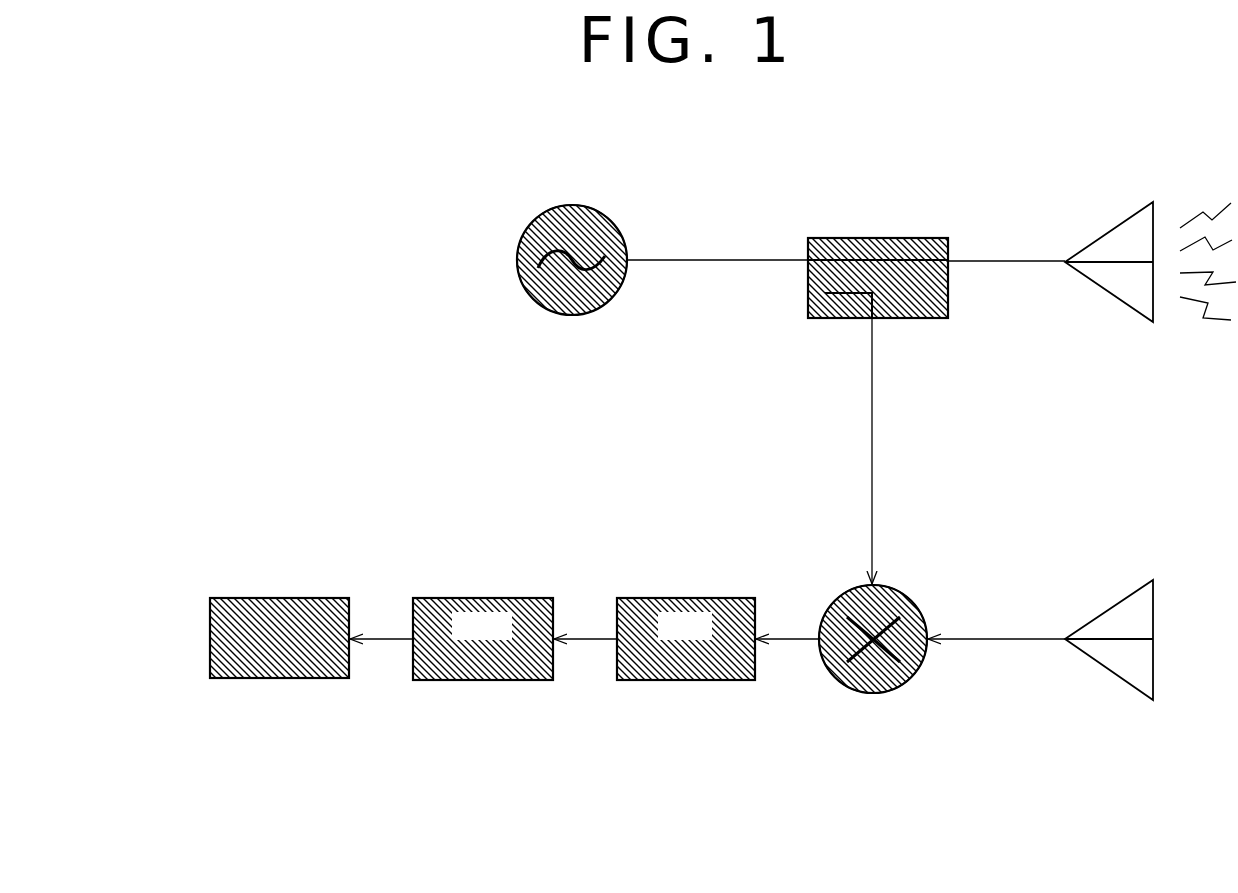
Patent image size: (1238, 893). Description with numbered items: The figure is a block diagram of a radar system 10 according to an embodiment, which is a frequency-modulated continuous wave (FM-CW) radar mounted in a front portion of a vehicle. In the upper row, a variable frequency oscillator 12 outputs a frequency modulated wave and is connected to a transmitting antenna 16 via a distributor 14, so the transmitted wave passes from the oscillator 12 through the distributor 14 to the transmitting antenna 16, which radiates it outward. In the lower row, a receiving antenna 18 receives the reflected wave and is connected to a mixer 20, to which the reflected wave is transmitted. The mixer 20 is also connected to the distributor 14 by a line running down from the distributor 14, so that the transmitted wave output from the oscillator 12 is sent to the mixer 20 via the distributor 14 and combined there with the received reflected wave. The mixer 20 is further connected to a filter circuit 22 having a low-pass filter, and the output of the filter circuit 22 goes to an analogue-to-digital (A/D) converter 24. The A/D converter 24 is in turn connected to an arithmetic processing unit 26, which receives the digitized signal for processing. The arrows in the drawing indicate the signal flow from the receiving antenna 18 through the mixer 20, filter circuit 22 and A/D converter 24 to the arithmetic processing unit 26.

The radar system 10 is at (377, 190).
The variable frequency oscillator 12 is at (574, 205).
The distributor 14 is at (862, 237).
The transmitting antenna 16 is at (1130, 212).
The receiving antenna 18 is at (1120, 682).
The mixer 20 is at (872, 694).
The filter circuit 22 is at (680, 597).
The analogue-to-digital (A/D) converter 24 is at (477, 597).
The arithmetic processing unit 26 is at (279, 597).